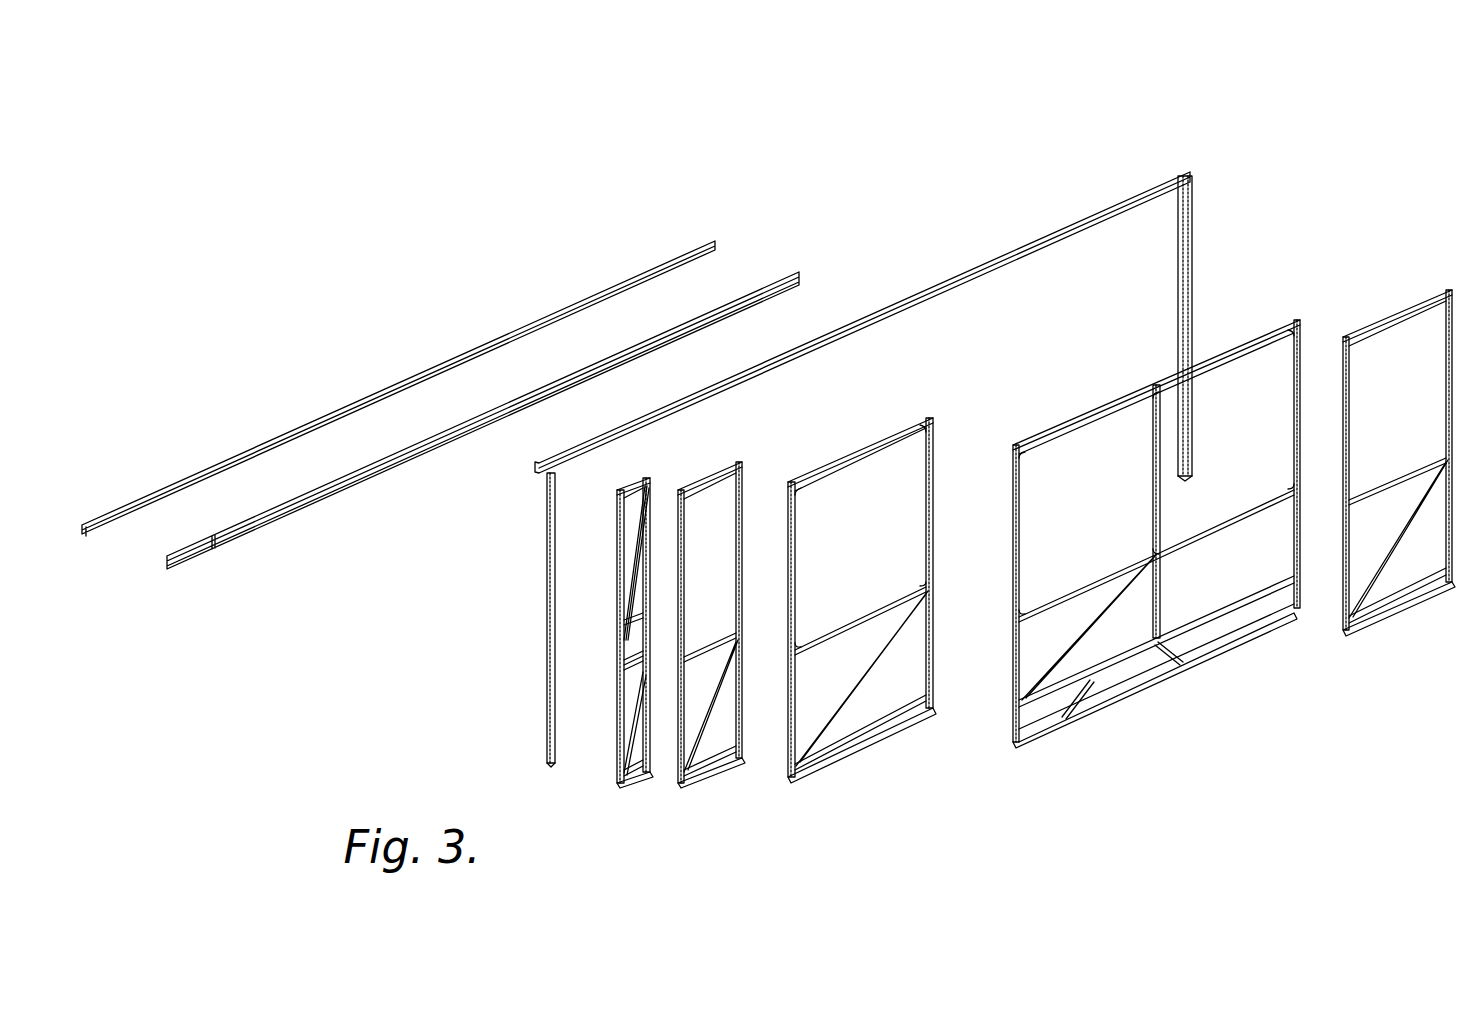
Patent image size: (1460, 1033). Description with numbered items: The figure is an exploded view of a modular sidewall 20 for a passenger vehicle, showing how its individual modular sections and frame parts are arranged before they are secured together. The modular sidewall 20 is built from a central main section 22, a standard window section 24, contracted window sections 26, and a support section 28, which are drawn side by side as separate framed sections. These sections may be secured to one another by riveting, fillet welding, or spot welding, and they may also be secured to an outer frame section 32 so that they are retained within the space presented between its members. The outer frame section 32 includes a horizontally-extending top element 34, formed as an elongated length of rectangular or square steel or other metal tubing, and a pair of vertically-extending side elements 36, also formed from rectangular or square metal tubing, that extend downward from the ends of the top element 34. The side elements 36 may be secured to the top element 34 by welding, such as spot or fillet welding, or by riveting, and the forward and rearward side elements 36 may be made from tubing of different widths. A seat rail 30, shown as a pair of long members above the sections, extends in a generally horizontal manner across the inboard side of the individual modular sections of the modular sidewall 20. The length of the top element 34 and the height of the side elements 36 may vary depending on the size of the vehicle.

The modular sidewall 20 is at (1417, 208).
The central main section 22 is at (1157, 680).
The standard window section 24 is at (835, 760).
The contracted window section 26 is at (718, 774).
The support section 28 is at (632, 782).
The seat rail 30 is at (712, 224).
The outer frame section 32 is at (516, 489).
The top element 34 is at (793, 357).
The side element 36 is at (548, 617).